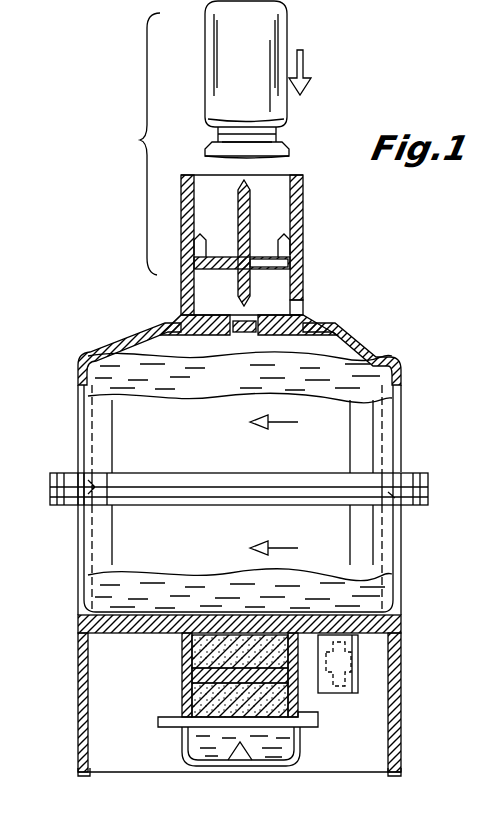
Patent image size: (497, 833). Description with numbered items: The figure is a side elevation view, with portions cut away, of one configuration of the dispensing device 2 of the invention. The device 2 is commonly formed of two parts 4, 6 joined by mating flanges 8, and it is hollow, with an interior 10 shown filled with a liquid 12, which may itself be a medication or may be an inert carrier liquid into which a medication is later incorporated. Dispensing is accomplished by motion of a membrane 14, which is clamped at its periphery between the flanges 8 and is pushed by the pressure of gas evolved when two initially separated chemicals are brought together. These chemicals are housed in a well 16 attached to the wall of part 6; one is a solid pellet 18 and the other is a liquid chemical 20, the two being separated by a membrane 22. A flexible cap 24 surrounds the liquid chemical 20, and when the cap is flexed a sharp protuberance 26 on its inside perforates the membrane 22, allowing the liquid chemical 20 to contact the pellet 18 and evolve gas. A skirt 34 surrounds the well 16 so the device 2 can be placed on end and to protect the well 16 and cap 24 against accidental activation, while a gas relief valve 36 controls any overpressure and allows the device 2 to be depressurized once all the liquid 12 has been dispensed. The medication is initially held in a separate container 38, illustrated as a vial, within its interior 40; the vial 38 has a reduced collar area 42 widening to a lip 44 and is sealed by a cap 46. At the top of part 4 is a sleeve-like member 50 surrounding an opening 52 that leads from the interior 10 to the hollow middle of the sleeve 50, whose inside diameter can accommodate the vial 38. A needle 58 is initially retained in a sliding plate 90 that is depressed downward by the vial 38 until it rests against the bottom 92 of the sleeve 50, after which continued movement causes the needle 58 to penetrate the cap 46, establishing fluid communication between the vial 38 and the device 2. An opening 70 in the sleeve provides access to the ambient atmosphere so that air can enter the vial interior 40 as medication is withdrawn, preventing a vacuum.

The device 2 is at (407, 335).
The part 4 is at (402, 433).
The part 6 is at (402, 543).
The mating flanges 8 is at (49, 485).
The interior 10 is at (137, 380).
The liquid 12 is at (232, 394).
The membrane 14 is at (118, 606).
The well 16 is at (190, 703).
The solid pellet 18 is at (189, 676).
The liquid chemical 20 is at (203, 748).
The membrane 22 is at (290, 745).
The flexible cap 24 is at (276, 768).
The sharp protuberance 26 is at (242, 762).
The skirt 34 is at (400, 712).
The gas relief valve 36 is at (358, 669).
The container 38 is at (286, 8).
The interior 40 is at (254, 86).
The reduced collar area 42 is at (286, 138).
The lip 44 is at (290, 150).
The cap 46 is at (222, 160).
The sleeve-like member 50 is at (304, 253).
The opening 52 is at (248, 338).
The needle 58 is at (250, 206).
The opening 70 is at (304, 308).
The sliding plate 90 is at (226, 258).
The bottom 92 is at (155, 162).